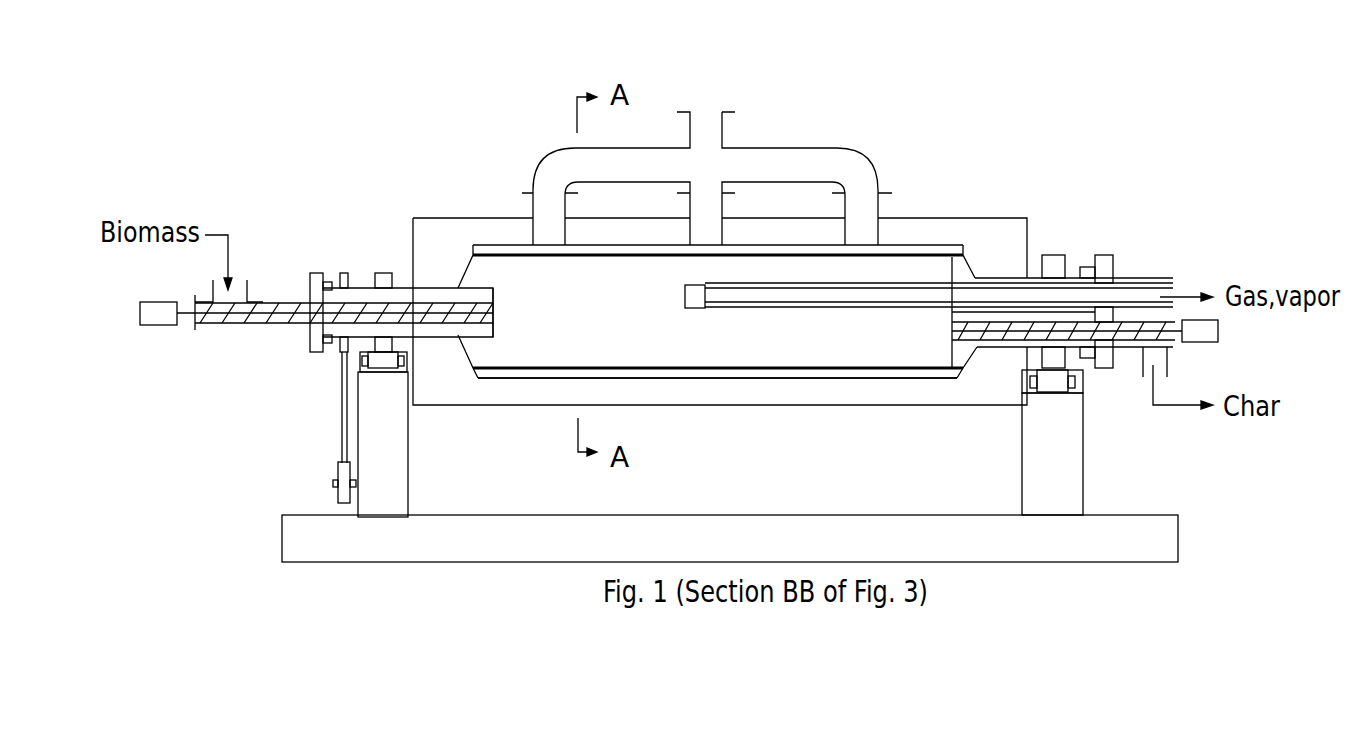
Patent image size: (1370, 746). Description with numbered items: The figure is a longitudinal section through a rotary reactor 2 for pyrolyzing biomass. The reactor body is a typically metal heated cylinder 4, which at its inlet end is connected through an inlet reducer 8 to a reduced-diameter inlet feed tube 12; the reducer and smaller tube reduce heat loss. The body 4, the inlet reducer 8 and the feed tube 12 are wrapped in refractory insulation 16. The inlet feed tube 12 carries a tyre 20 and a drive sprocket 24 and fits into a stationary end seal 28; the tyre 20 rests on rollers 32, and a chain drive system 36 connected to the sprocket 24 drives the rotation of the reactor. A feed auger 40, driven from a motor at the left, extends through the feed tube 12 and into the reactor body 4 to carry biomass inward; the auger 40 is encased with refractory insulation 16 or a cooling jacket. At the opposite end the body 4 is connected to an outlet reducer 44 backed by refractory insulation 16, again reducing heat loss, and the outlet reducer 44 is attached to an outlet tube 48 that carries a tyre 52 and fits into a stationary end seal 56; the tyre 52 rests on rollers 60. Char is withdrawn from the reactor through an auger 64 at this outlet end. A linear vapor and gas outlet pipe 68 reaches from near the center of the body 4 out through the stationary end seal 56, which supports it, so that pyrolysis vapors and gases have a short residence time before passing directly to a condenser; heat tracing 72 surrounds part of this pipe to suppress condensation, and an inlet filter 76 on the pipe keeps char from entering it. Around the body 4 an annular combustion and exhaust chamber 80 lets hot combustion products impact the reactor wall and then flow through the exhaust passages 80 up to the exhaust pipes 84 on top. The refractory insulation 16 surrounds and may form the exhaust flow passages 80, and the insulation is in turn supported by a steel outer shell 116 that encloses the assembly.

The rotary reactor 2 is at (472, 118).
The heated cylinder 4 is at (592, 257).
The inlet reducer 8 is at (470, 263).
The inlet feed tube 12 is at (403, 287).
The refractory insulation 16 is at (425, 293).
The tyre 20 is at (383, 273).
The drive sprocket 24 is at (343, 273).
The stationary end seal 28 is at (312, 273).
The rollers 32 is at (365, 360).
The chain drive system 36 is at (337, 483).
The feed auger 40 is at (297, 312).
The outlet reducer 44 is at (968, 270).
The outlet tube 48 is at (1015, 347).
The tyre 52 is at (1050, 255).
The stationary end seal 56 is at (1102, 255).
The rollers 60 is at (1055, 383).
The auger 64 is at (953, 340).
The vapor and gas outlet pipe 68 is at (765, 300).
The heat tracing 72 is at (812, 313).
The inlet filter 76 is at (687, 312).
The annular combustion and exhaust chamber 80 is at (757, 248).
The exhaust pipes 84 is at (772, 148).
The steel outer shell 116 is at (760, 410).